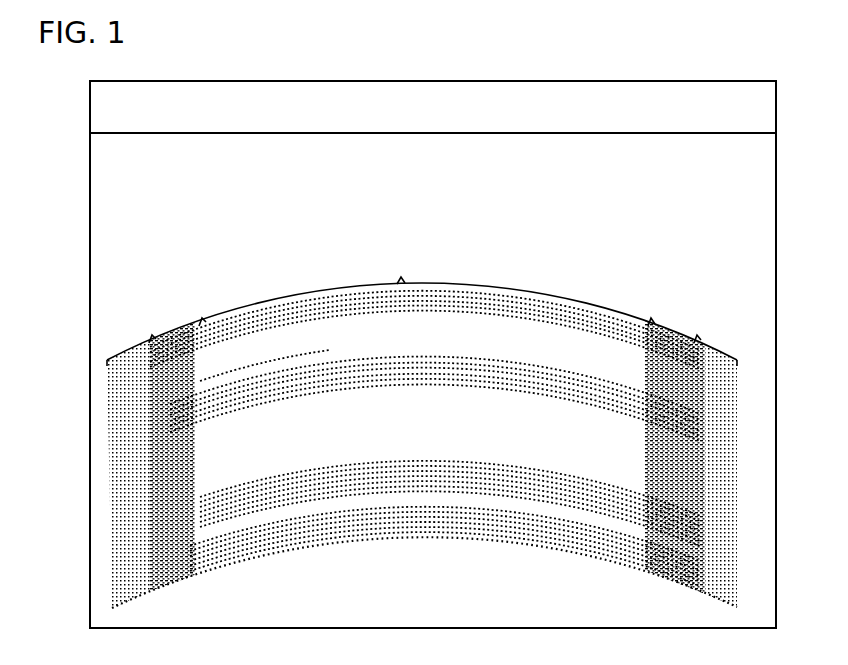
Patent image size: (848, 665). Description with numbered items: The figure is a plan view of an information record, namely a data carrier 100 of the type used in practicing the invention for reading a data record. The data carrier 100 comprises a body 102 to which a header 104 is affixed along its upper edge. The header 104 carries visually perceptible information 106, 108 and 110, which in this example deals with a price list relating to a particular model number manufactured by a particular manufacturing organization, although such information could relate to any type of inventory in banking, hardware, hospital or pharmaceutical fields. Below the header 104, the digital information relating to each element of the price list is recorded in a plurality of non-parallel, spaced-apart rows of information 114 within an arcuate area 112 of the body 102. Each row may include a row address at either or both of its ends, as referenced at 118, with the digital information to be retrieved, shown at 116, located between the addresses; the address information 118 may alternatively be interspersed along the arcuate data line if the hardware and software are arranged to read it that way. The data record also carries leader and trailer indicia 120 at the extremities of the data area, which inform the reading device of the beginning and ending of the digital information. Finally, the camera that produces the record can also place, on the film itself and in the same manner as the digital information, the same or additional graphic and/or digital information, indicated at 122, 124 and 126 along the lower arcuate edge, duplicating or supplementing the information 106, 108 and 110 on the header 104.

The data carrier 100 is at (148, 637).
The body 102 is at (102, 232).
The header 104 is at (93, 120).
The visually perceptible information 106 is at (215, 58).
The visually perceptible information 108 is at (395, 84).
The visually perceptible information 110 is at (641, 90).
The area 112 is at (419, 427).
The rows of information 114 is at (737, 385).
The digital information 116 is at (422, 307).
The row address 118 is at (176, 328).
The leader (trailer) indicia 120 is at (140, 320).
The information recorded on the film 122 is at (240, 588).
The information recorded on the film 124 is at (426, 565).
The information recorded on the film 126 is at (626, 590).